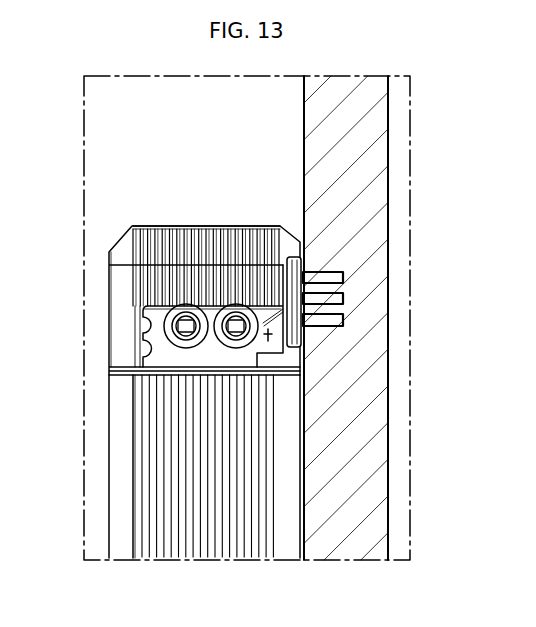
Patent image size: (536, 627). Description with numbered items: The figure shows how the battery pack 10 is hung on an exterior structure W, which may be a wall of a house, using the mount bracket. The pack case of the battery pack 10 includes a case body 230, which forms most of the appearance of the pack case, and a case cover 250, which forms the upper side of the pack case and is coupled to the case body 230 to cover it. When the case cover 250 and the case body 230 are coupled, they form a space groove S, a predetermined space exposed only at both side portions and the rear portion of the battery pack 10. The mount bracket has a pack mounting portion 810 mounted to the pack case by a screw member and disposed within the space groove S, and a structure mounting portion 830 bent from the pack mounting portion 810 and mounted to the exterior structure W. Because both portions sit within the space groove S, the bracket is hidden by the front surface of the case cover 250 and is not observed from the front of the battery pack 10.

The battery pack 10 is at (128, 166).
The case cover 250 is at (82, 291).
The case body 230 is at (82, 439).
The structure mounting portion 830 is at (296, 270).
The pack mounting portion 810 is at (285, 308).
The space groove S is at (272, 336).
The exterior structure W is at (373, 164).